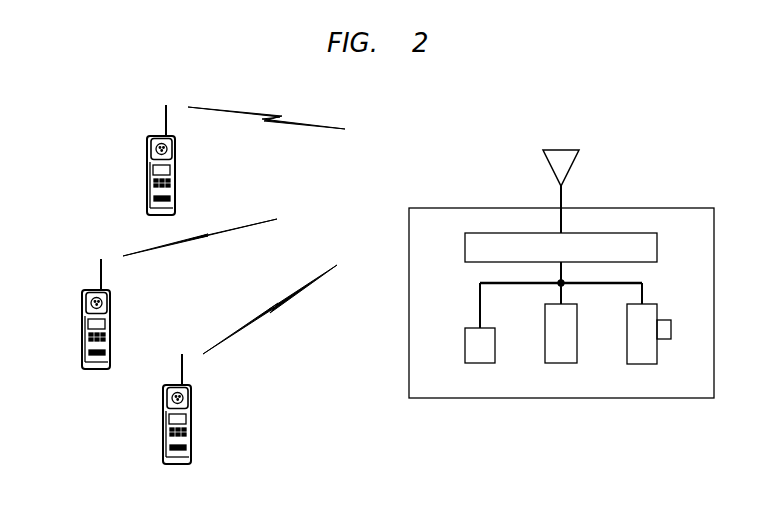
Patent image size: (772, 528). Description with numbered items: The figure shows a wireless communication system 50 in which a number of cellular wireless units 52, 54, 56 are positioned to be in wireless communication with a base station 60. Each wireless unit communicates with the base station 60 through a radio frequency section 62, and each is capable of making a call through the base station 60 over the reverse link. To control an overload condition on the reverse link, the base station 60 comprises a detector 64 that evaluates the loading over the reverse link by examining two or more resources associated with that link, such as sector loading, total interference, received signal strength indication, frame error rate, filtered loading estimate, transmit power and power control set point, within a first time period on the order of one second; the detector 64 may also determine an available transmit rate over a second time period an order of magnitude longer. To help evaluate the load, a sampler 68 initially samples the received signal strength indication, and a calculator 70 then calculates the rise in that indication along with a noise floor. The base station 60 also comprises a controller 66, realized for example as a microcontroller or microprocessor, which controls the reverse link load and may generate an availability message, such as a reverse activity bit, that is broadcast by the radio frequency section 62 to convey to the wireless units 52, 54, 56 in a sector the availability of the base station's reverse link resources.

The wireless communication system 50 is at (584, 242).
The cellular wireless unit 52 is at (145, 204).
The cellular wireless unit 54 is at (82, 362).
The cellular wireless unit 56 is at (163, 455).
The base station 60 is at (714, 216).
The radio frequency section 62 is at (465, 262).
The detector 64 is at (465, 364).
The controller 66 is at (545, 364).
The sampler 68 is at (627, 364).
The calculator 70 is at (670, 320).